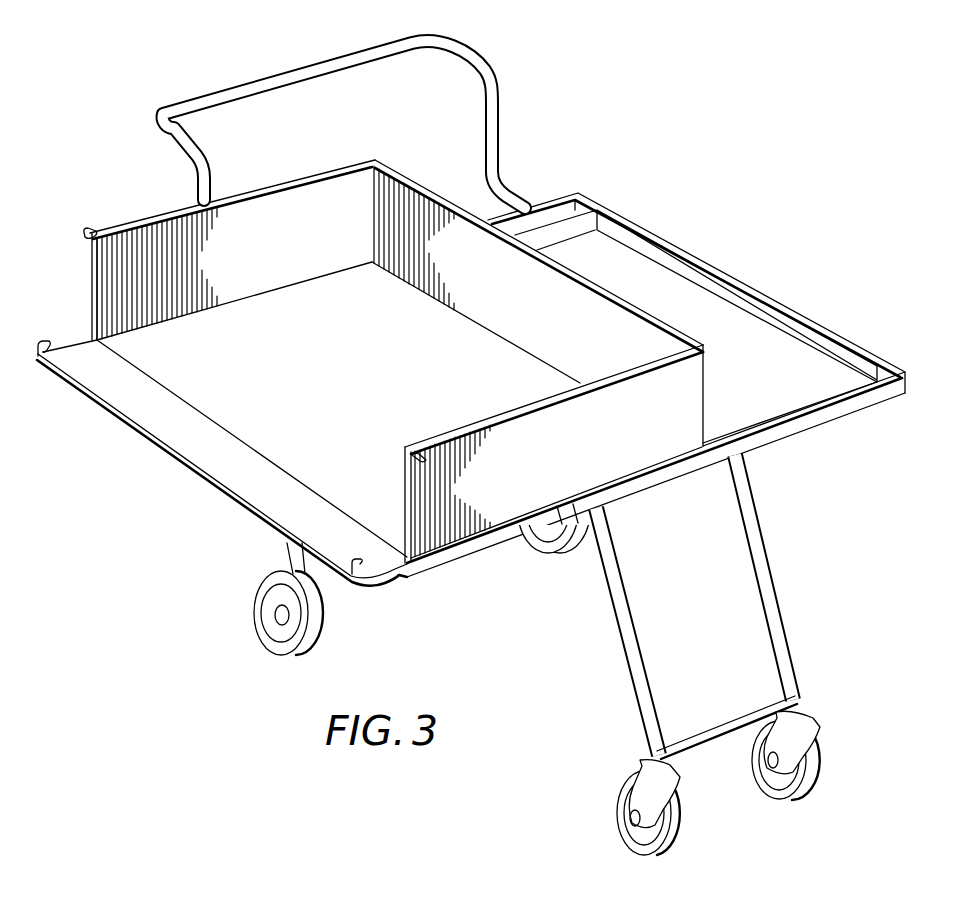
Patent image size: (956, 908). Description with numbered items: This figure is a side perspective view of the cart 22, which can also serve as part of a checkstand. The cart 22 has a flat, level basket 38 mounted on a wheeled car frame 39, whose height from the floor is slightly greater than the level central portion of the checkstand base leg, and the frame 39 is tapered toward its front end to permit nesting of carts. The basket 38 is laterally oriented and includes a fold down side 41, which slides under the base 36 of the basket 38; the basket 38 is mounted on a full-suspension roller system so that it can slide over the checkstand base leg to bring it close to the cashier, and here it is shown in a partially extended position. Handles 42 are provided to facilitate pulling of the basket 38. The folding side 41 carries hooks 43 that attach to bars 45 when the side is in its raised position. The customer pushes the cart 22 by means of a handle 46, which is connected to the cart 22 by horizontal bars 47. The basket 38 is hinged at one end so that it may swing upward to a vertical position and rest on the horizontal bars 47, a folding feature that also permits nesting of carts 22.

The cart 22 is at (483, 436).
The base of basket 36 is at (354, 386).
The basket 38 is at (393, 342).
The wheeled car frame 39 is at (789, 647).
The fold down side 41 is at (470, 471).
The handles 42 is at (388, 584).
The hooks 43 is at (46, 338).
The bars 45 is at (89, 228).
The handle 46 is at (302, 67).
The horizontal bars 47 is at (517, 193).